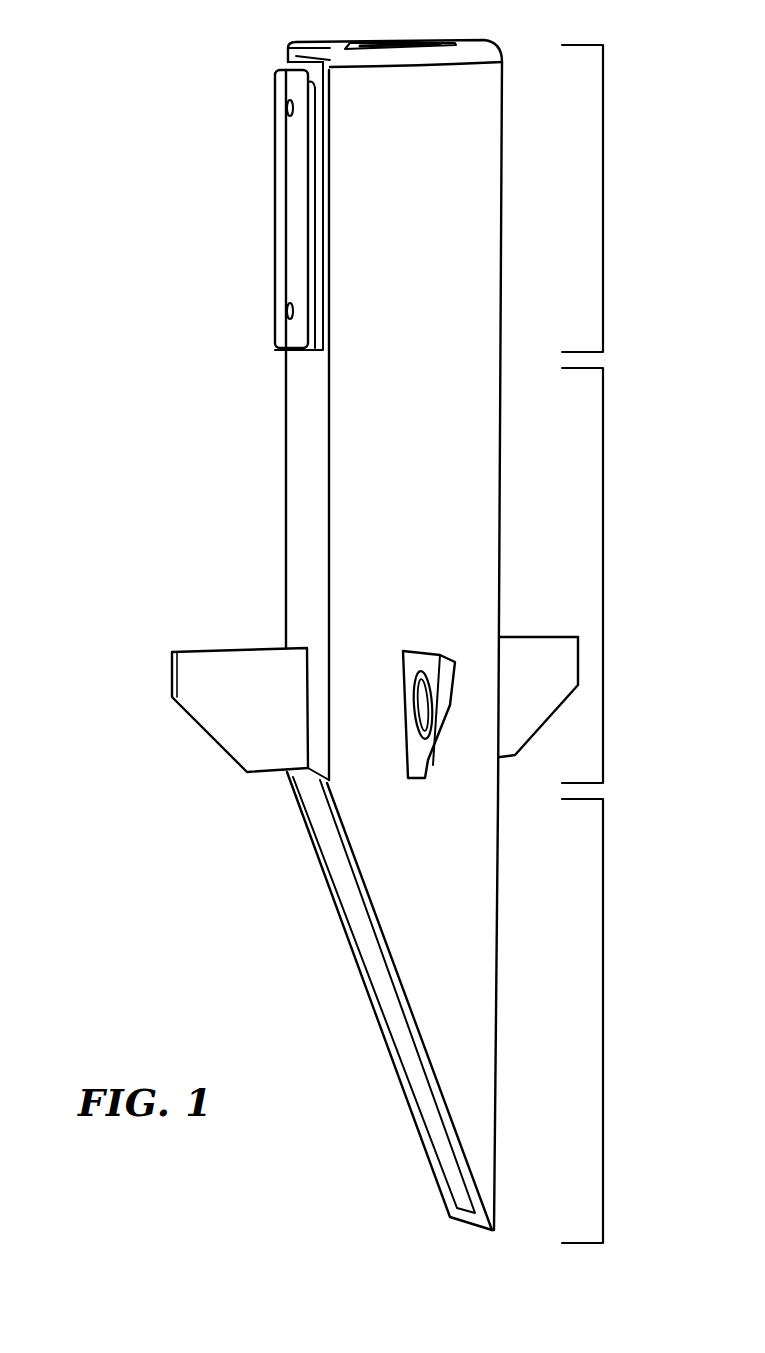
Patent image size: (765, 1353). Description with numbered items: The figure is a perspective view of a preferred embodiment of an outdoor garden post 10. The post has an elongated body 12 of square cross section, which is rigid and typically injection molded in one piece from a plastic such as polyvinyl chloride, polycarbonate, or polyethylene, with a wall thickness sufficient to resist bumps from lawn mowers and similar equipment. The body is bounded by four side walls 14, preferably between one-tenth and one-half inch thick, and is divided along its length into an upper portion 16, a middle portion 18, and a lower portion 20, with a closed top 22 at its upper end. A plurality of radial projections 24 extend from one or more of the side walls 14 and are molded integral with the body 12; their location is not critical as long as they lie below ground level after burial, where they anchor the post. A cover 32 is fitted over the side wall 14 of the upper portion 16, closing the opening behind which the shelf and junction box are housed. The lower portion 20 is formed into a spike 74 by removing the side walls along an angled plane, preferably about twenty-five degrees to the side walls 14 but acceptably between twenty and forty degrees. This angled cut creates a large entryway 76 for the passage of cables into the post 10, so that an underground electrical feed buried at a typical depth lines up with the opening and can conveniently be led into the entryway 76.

The outdoor garden post 10 is at (150, 258).
The elongated body 12 is at (348, 437).
The side walls 14 is at (434, 249).
The upper portion 16 is at (604, 198).
The middle portion 18 is at (604, 575).
The lower portion 20 is at (604, 1021).
The closed top 22 is at (455, 45).
The radial projections 24 is at (278, 716).
The cover 32 is at (290, 200).
The spike 74 is at (487, 1117).
The entryway 76 is at (363, 940).